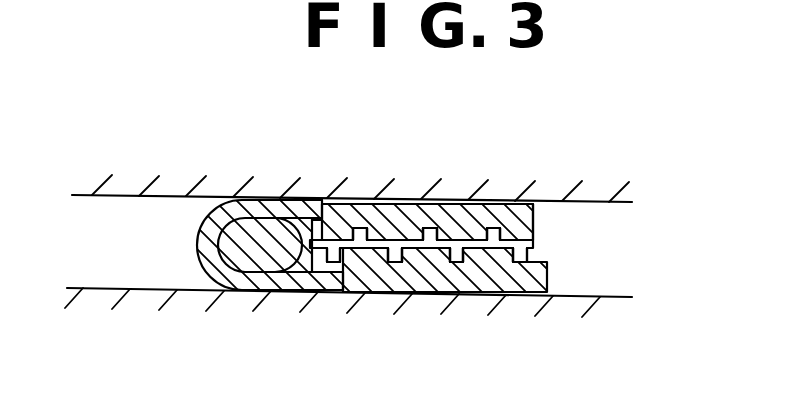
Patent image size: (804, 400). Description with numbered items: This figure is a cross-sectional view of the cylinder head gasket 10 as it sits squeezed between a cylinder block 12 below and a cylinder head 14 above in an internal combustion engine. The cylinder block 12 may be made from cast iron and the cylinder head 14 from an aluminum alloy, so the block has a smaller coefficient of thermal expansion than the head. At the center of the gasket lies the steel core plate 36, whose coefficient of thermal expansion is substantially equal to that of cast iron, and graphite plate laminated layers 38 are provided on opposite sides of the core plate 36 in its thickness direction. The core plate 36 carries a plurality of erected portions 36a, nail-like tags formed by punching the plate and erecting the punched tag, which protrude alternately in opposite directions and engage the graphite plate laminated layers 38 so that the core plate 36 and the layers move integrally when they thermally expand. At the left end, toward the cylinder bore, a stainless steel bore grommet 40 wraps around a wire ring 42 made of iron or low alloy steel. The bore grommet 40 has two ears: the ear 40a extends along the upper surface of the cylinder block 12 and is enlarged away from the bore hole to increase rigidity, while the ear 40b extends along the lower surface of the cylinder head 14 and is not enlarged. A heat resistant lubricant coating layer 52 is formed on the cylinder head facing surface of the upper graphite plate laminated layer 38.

The cylinder head gasket 10 is at (533, 228).
The cylinder block 12 is at (545, 313).
The cylinder head 14 is at (602, 186).
The steel core plate 36 is at (440, 230).
The erected portions 36a is at (366, 232).
The graphite plate laminated layers 38 is at (446, 274).
The bore grommet 40 is at (196, 226).
The ear 40a is at (293, 282).
The ear 40b is at (300, 212).
The wire ring 42 is at (252, 228).
The heat resistant lubricant coating layer 52 is at (487, 204).